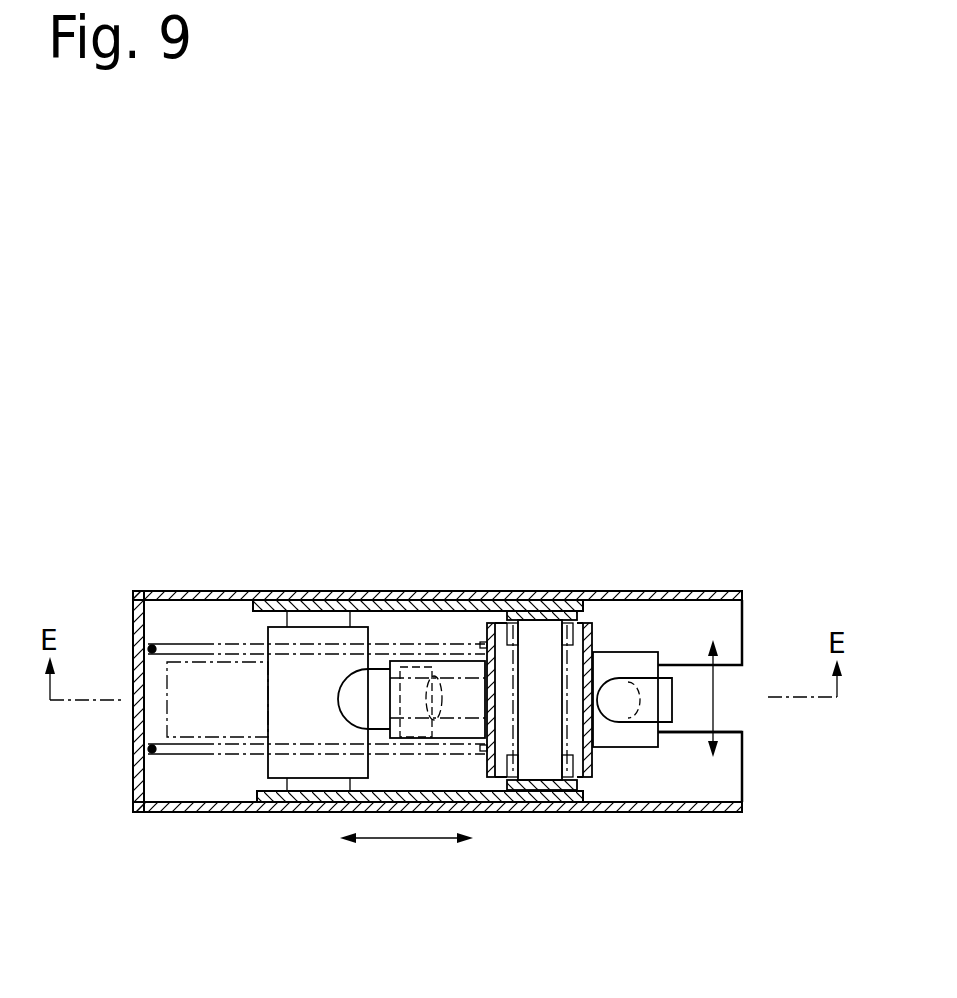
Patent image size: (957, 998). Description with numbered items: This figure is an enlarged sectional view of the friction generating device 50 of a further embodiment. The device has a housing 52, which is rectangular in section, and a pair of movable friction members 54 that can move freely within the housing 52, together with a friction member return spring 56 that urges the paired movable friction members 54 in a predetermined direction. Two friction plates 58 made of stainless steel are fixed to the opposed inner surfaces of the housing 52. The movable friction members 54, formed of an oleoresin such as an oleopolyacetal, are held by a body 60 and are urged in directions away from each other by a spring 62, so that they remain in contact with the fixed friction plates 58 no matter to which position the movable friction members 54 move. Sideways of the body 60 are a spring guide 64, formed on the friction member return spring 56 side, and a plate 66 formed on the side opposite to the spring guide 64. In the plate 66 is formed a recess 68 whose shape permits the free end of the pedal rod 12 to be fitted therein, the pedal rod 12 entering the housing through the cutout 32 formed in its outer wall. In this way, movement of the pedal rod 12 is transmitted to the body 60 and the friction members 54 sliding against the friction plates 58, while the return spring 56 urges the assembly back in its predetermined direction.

The friction generating device 50 is at (437, 639).
The housing 52 is at (243, 600).
The friction member return spring 56 is at (182, 650).
The friction plates 58 is at (440, 603).
The spring guide 64 is at (462, 692).
The movable friction members 54 is at (533, 612).
The body 60 is at (593, 628).
The spring 62 is at (528, 757).
The plate 66 is at (638, 663).
The recess 68 is at (645, 713).
The pedal rod 12 is at (617, 703).
The cutout 32 is at (735, 727).